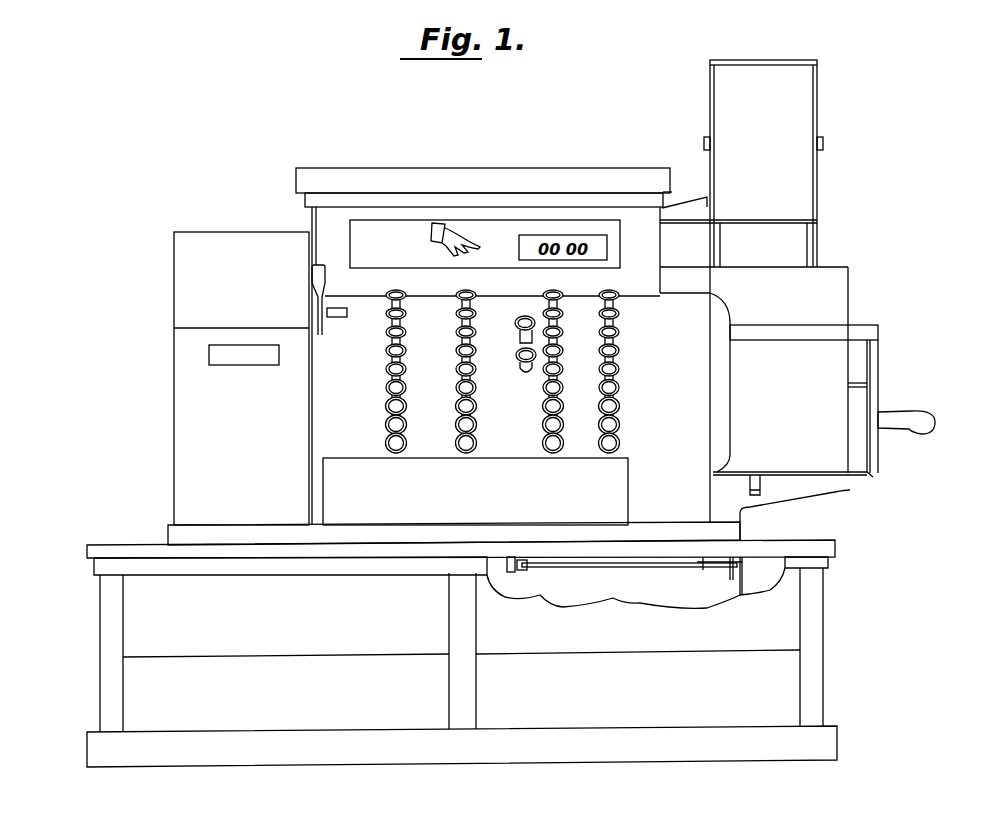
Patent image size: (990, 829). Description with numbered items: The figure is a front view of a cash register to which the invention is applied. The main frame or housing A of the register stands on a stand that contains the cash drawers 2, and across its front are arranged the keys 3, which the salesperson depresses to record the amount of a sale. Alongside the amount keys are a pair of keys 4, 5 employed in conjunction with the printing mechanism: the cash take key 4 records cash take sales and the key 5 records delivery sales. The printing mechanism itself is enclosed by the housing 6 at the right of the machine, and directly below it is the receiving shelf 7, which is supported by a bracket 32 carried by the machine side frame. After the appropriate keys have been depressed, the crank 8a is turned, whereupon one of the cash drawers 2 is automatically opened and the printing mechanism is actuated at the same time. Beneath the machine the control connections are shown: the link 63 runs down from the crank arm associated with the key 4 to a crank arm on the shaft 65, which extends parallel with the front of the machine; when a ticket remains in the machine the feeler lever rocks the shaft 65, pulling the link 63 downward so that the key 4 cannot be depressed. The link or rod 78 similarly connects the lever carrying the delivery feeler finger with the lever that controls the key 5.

The main frame or housing A is at (138, 545).
The cash drawers 2 is at (462, 653).
The keys 3 is at (392, 393).
The cash take key 4 is at (516, 329).
The delivery sales key 5 is at (517, 360).
The housing 6 is at (840, 306).
The receiving shelf 7 is at (813, 473).
The crank 8a is at (948, 374).
The bracket 32 is at (798, 493).
The link 63 is at (518, 560).
The shaft 65 is at (588, 567).
The link or rod 78 is at (533, 557).